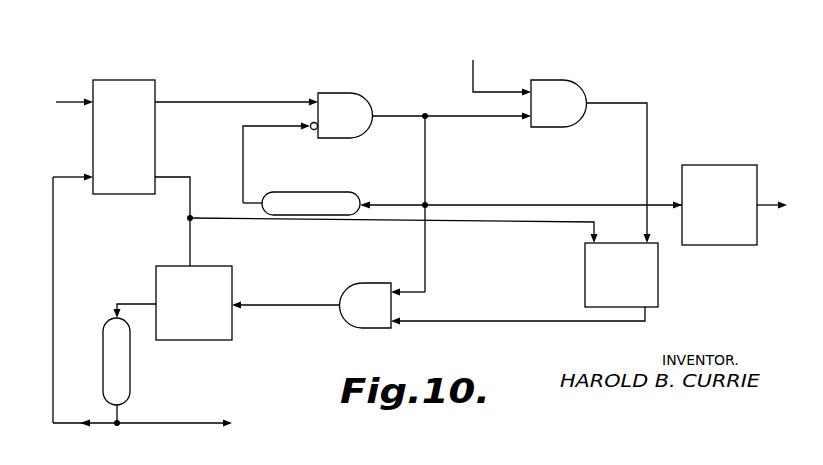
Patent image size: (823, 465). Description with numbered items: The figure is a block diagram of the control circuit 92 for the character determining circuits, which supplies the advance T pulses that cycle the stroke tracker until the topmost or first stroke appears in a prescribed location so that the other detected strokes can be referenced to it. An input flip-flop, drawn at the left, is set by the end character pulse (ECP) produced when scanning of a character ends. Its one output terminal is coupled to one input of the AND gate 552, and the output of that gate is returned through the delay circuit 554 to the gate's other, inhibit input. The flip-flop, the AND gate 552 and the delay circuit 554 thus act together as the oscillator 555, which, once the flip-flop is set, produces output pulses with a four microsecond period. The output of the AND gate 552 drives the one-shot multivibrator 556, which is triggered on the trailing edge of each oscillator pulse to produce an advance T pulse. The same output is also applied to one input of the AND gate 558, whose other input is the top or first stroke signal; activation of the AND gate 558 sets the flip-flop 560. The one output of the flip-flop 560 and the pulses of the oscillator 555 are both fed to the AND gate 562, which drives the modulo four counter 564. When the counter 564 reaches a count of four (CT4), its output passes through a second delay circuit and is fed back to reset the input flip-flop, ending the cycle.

The control circuit 92 is at (403, 224).
The AND gate 552 is at (352, 93).
The delay circuit 554 is at (326, 192).
The oscillator 555 is at (218, 137).
The one-shot multivibrator 556 is at (731, 165).
The AND gate 558 is at (568, 80).
The flip-flop 560 is at (658, 283).
The AND gate 562 is at (380, 328).
The modulo 4 counter 564 is at (232, 270).